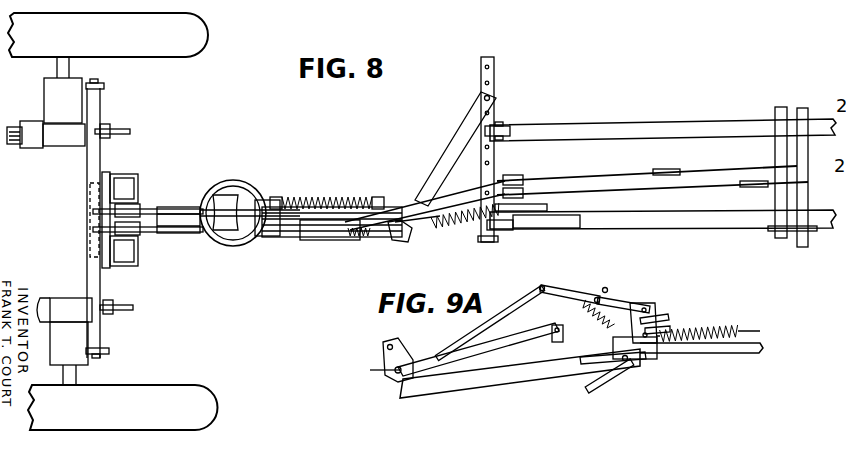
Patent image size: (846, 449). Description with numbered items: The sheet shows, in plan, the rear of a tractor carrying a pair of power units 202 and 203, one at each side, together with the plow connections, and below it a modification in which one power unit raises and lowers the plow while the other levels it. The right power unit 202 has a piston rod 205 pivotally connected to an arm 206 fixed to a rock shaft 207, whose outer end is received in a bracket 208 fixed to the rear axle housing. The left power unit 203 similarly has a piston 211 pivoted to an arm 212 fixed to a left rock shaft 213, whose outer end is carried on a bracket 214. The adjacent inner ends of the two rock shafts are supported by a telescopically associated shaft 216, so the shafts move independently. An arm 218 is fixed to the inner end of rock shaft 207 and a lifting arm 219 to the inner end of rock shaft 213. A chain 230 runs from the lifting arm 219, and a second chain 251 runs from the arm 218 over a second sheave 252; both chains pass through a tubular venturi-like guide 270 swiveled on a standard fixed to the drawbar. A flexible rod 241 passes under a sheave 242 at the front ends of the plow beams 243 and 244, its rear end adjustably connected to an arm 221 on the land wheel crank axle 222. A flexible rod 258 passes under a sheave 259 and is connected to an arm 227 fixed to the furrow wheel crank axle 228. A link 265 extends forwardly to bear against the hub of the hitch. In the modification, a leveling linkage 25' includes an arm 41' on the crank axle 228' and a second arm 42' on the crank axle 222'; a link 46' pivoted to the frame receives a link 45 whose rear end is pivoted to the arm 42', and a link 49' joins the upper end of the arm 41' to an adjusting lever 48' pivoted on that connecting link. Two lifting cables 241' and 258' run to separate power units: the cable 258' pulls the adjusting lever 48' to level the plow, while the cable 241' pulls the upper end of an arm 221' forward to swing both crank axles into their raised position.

In FIG. 8, the power unit 202 is at (58, 118).
In FIG. 8, the power unit 203 is at (64, 295).
In FIG. 8, the piston rod 205 is at (110, 128).
In FIG. 8, the arm 206 is at (128, 132).
In FIG. 8, the rock shaft 207 is at (100, 154).
In FIG. 8, the bracket 208 is at (104, 90).
In FIG. 8, the piston 211 is at (118, 302).
In FIG. 8, the arm 212 is at (132, 310).
In FIG. 8, the rock shaft 213 is at (100, 332).
In FIG. 8, the bracket 214 is at (110, 352).
In FIG. 8, the telescopically associated shaft 216 is at (90, 207).
In FIG. 8, the arm 218 is at (151, 210).
In FIG. 8, the lifting arm 219 is at (158, 232).
In FIG. 8, the arm 221 is at (749, 196).
In FIG. 8, the land wheel crank axle 222 is at (821, 177).
In FIG. 8, the arm 227 is at (700, 173).
In FIG. 8, the furrow wheel crank axle 228 is at (763, 172).
In FIG. 8, the chain 230 is at (240, 238).
In FIG. 8, the flexible rod 241 is at (652, 198).
In FIG. 8, the sheave 242 is at (526, 191).
In FIG. 8, the plow beam 243 is at (700, 230).
In FIG. 9A, the plow beam 243 is at (487, 366).
In FIG. 8, the plow beam 244 is at (636, 134).
In FIG. 8, the second chain 251 is at (240, 200).
In FIG. 8, the second sheave 252 is at (136, 203).
In FIG. 8, the flexible rod 258 is at (647, 160).
In FIG. 8, the sheave 259 is at (516, 178).
In FIG. 8, the link 265 is at (292, 206).
In FIG. 8, the tubular venturi-like guide 270 is at (222, 196).
In FIG. 9A, the leveling linkage 25' is at (655, 312).
In FIG. 9A, the arm 41' is at (670, 322).
In FIG. 9A, the second arm 42' is at (708, 326).
In FIG. 9A, the link 45 is at (600, 334).
In FIG. 9A, the link 46' is at (576, 328).
In FIG. 9A, the adjusting lever 48' is at (574, 290).
In FIG. 9A, the link 49' is at (669, 310).
In FIG. 9A, the arm 221' is at (624, 295).
In FIG. 9A, the crank axle 222' is at (603, 369).
In FIG. 9A, the crank axle 228' is at (616, 377).
In FIG. 9A, the lifting cable 241' is at (478, 349).
In FIG. 9A, the lifting cable 258' is at (489, 323).